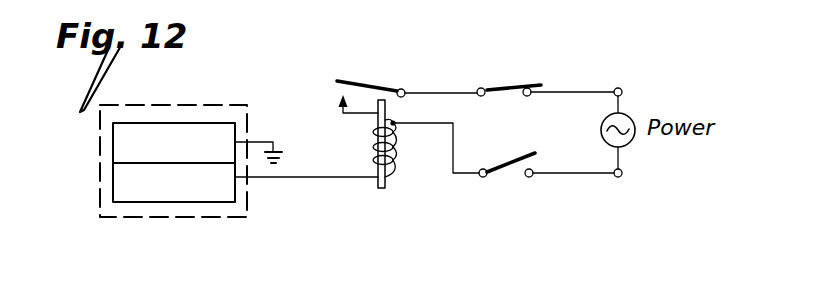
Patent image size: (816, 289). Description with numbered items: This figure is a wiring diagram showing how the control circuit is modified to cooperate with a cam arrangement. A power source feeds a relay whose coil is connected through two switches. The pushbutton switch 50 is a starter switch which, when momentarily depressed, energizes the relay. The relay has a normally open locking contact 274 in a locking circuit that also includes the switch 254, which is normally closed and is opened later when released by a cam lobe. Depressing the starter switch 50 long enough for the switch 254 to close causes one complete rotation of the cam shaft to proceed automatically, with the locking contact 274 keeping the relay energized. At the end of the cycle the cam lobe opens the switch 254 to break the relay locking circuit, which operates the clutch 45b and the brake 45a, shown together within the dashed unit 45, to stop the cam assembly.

The clutch and brake unit 45 is at (200, 105).
The brake 45a is at (130, 143).
The clutch 45b is at (130, 179).
The normally open locking contact 274 is at (358, 82).
The switch 254 is at (500, 87).
The pushbutton switch 50 is at (507, 160).